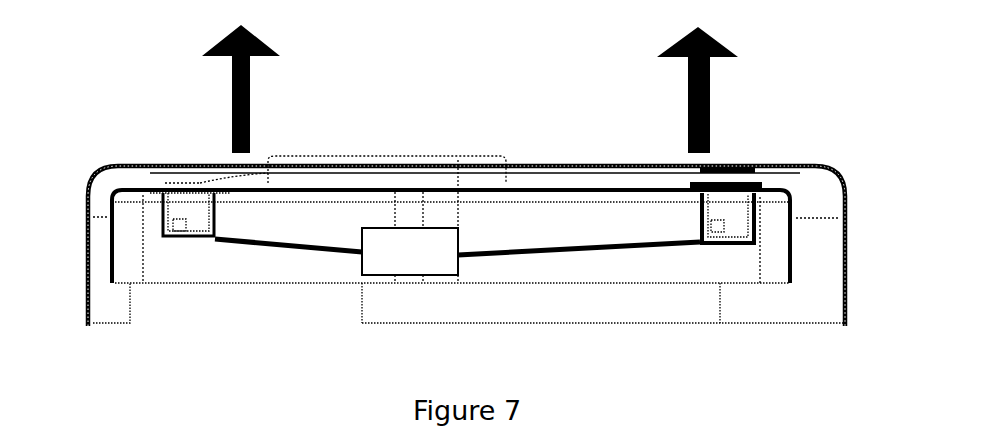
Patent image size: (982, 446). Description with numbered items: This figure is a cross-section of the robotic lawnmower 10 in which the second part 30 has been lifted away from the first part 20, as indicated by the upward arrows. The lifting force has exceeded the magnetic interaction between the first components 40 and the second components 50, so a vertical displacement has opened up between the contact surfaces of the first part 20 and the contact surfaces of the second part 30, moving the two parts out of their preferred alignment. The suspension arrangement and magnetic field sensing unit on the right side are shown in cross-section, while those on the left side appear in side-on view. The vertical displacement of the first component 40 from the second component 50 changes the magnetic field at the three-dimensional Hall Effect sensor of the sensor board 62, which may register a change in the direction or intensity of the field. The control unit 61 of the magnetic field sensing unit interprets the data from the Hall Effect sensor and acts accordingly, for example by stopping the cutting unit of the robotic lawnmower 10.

The robotic lawnmower 10 is at (124, 133).
The first part 20 is at (292, 286).
The second part 30 is at (382, 313).
The first component 40 is at (160, 183).
The second component 50 is at (162, 172).
The control unit 61 is at (457, 251).
The sensor board 62 is at (188, 250).